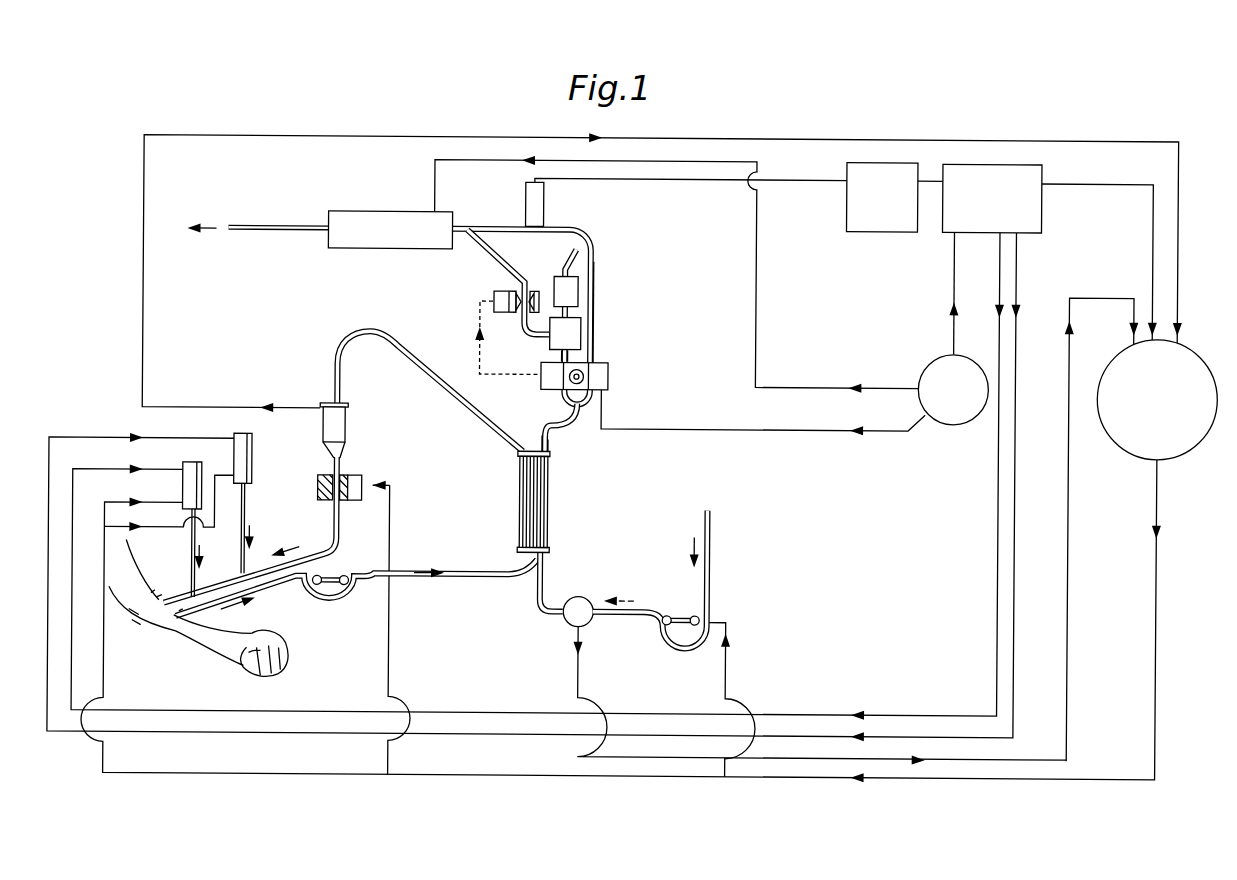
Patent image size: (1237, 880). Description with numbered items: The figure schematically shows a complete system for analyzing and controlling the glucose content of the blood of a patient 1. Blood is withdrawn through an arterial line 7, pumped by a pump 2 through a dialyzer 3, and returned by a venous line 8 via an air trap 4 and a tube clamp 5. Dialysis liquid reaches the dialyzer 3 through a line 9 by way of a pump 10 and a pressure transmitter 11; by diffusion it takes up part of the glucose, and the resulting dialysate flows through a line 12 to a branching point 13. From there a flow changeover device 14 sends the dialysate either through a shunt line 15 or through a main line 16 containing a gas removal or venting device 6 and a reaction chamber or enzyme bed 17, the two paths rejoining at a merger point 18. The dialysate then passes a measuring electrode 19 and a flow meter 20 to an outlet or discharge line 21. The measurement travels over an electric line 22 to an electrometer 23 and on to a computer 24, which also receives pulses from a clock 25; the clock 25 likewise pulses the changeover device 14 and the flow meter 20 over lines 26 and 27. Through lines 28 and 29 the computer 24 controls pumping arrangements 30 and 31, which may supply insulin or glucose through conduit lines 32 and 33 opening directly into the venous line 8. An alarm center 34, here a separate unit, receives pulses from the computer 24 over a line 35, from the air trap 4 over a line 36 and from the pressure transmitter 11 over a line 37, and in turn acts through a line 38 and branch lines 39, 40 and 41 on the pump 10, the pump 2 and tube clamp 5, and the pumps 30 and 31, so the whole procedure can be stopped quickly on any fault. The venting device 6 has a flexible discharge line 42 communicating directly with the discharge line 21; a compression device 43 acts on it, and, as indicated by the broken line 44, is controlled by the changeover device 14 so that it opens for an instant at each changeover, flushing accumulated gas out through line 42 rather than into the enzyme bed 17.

The patient 1 is at (197, 637).
The pump 2 is at (335, 586).
The dialyzer 3 is at (549, 521).
The air trap 4 is at (349, 419).
The tube clamp 5 is at (362, 478).
The gas removal or venting device 6 is at (581, 335).
The arterial line 7 is at (458, 568).
The venous line 8 is at (338, 546).
The line 9 is at (712, 581).
The pump 10 is at (682, 616).
The pressure transmitter 11 is at (592, 584).
The line 12 is at (560, 430).
The branching point 13 is at (567, 406).
The flow changeover device 14 is at (608, 378).
The shunt line 15 is at (594, 322).
The main line 16 is at (561, 357).
The reaction chamber or enzyme bed 17 is at (578, 293).
The merger point 18 is at (588, 238).
The measuring electrode 19 is at (544, 207).
The flow meter 20 is at (373, 218).
The outlet or discharge line 21 is at (282, 228).
The electric line 22 is at (795, 179).
The electrometer 23 is at (881, 198).
The computer 24 is at (991, 198).
The clock 25 is at (953, 390).
The line 26 is at (737, 430).
The line 27 is at (845, 386).
The line 28 is at (998, 608).
The line 29 is at (1015, 618).
The pumping arrangement 30 is at (183, 483).
The pumping arrangement 31 is at (252, 457).
The conduit line 32 is at (192, 546).
The conduit line 33 is at (245, 516).
The alarm center 34 is at (1157, 399).
The line 35 is at (1097, 181).
The line 36 is at (1177, 240).
The line 37 is at (1069, 660).
The line 38 is at (1157, 653).
The branch line 39 is at (727, 662).
The branch line 40 is at (390, 656).
The branch line 41 is at (105, 684).
The discharge line 42 is at (497, 260).
The compression device 43 is at (493, 298).
The broken line 44 is at (478, 350).